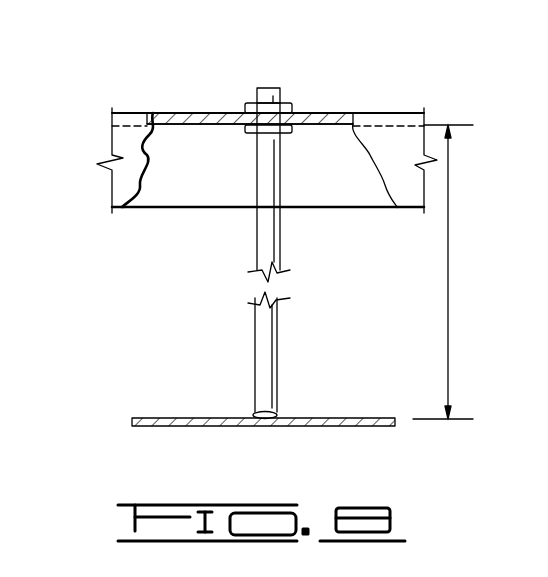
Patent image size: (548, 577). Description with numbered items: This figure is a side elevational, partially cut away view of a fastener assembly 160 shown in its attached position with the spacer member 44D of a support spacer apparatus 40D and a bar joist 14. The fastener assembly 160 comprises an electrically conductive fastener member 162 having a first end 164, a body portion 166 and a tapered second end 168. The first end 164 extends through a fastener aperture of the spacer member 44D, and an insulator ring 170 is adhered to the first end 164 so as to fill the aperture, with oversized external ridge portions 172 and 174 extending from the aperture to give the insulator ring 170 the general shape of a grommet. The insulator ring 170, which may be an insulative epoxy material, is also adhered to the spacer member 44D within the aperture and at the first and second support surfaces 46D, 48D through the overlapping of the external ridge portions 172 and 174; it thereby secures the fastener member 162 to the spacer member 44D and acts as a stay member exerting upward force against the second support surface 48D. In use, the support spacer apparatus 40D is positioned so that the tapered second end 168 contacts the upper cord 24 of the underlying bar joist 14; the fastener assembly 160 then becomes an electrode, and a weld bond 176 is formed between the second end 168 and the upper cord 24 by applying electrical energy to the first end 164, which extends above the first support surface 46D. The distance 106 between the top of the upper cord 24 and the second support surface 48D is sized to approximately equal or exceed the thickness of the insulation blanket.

The support spacer apparatus 40D is at (135, 110).
The spacer member 44D is at (220, 112).
The first support surface 46D is at (398, 112).
The second support surface 48D is at (352, 125).
The fastener assembly 160 is at (268, 88).
The insulator ring 170 is at (291, 100).
The external ridge portion 172 is at (290, 108).
The external ridge portion 174 is at (283, 133).
The first end 164 is at (257, 166).
The fastener member 162 is at (255, 238).
The body portion 166 is at (283, 325).
The tapered second end 168 is at (258, 410).
The weld bond 176 is at (280, 410).
The upper cord 24 is at (162, 418).
The bar joist 14 is at (141, 426).
The distance 106 is at (444, 272).